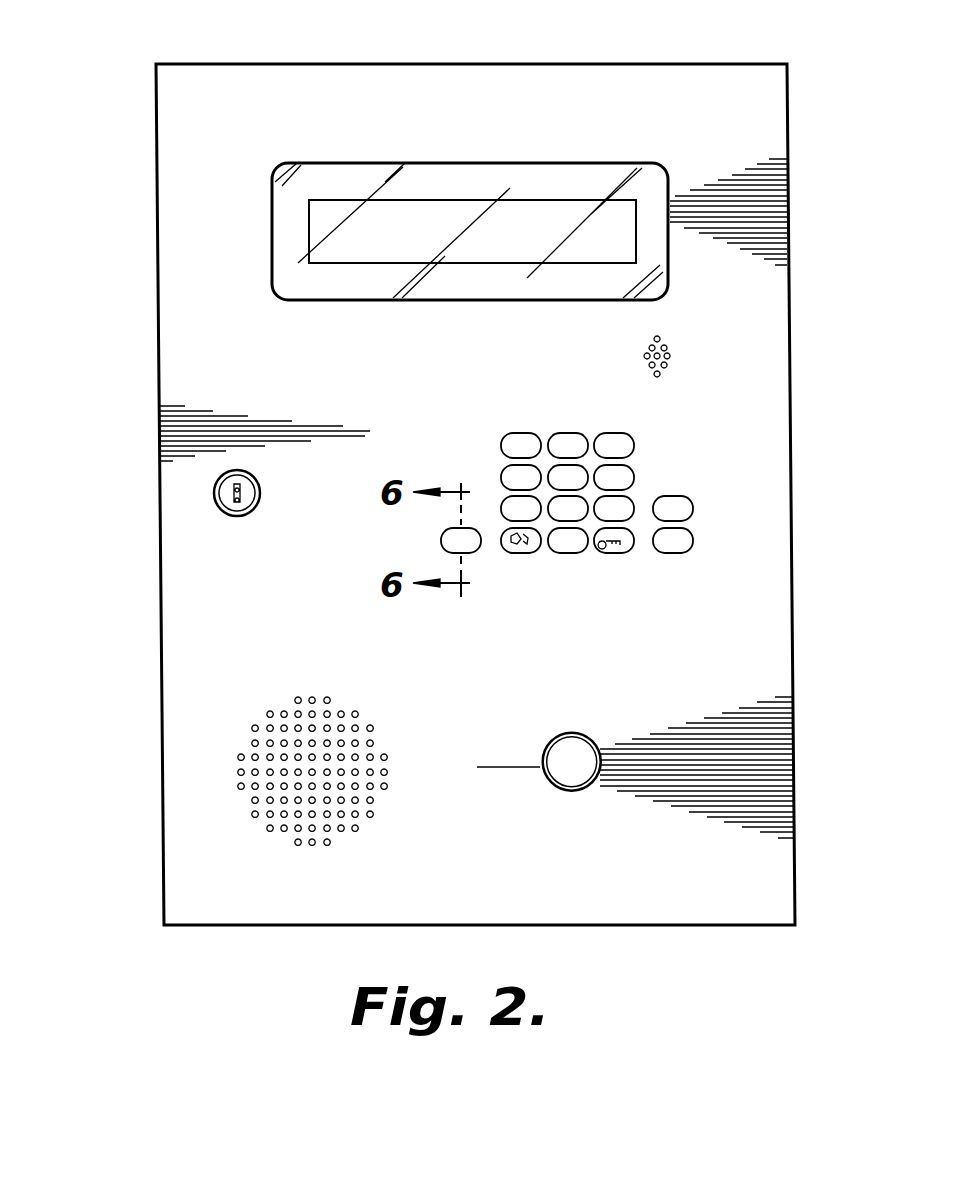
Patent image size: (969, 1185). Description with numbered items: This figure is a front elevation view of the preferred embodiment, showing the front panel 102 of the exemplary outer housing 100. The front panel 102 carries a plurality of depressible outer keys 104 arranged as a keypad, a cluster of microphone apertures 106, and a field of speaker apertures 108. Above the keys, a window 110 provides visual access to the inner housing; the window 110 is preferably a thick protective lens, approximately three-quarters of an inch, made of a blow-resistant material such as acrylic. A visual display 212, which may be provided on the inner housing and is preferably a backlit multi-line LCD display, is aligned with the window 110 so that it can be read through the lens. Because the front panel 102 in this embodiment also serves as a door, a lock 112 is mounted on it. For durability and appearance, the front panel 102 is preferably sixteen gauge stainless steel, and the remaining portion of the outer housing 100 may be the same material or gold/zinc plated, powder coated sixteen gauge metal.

The outer housing 100 is at (136, 280).
The front panel 102 is at (205, 730).
The depressible outer keys 104 is at (706, 547).
The microphone apertures 106 is at (676, 363).
The speaker apertures 108 is at (279, 845).
The window 110 is at (576, 151).
The lock 112 is at (209, 489).
The visual display 212 is at (446, 200).